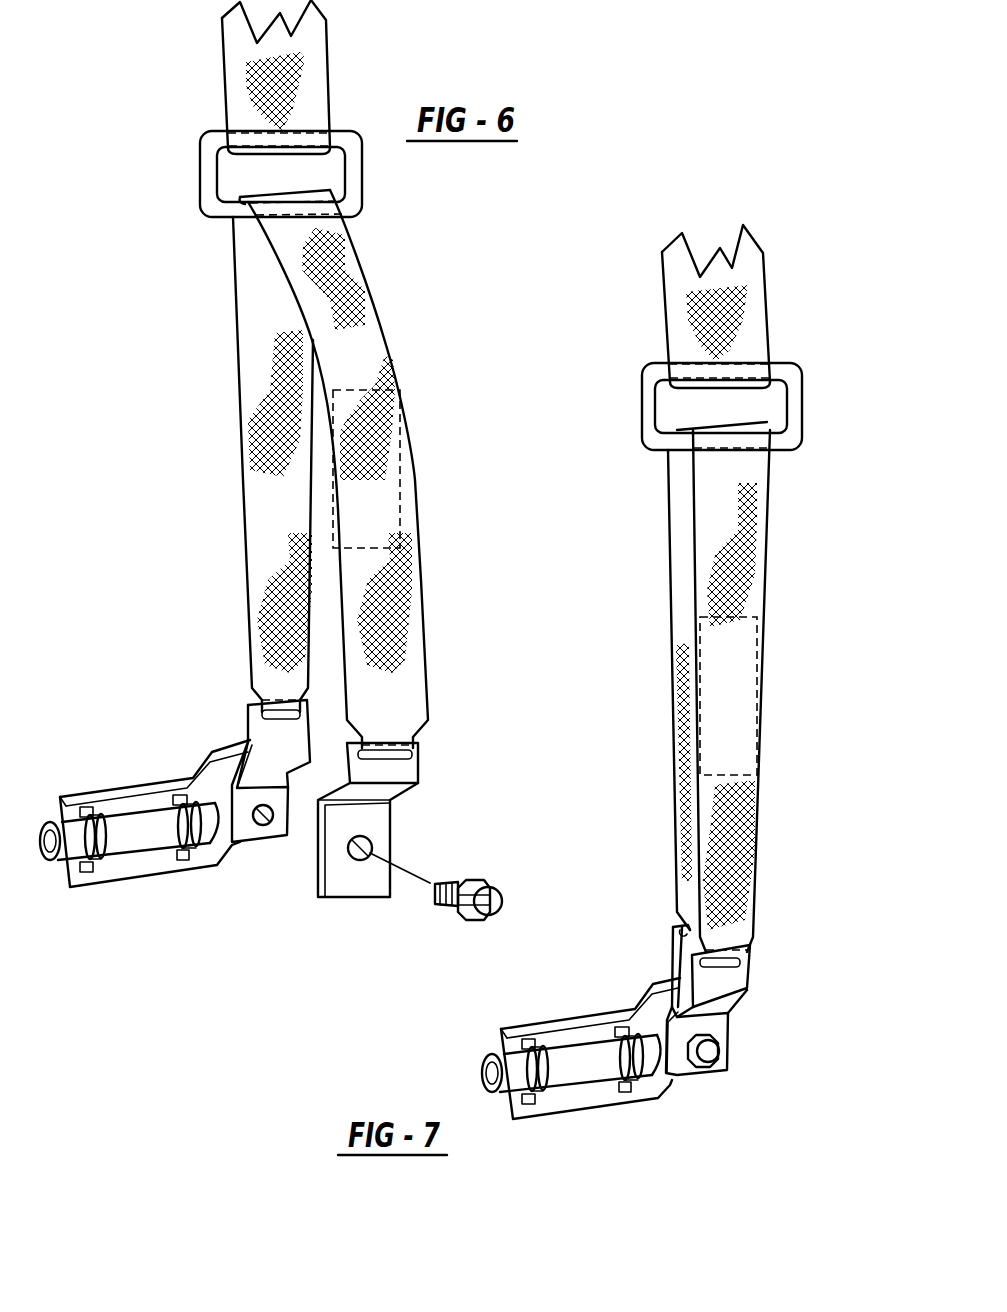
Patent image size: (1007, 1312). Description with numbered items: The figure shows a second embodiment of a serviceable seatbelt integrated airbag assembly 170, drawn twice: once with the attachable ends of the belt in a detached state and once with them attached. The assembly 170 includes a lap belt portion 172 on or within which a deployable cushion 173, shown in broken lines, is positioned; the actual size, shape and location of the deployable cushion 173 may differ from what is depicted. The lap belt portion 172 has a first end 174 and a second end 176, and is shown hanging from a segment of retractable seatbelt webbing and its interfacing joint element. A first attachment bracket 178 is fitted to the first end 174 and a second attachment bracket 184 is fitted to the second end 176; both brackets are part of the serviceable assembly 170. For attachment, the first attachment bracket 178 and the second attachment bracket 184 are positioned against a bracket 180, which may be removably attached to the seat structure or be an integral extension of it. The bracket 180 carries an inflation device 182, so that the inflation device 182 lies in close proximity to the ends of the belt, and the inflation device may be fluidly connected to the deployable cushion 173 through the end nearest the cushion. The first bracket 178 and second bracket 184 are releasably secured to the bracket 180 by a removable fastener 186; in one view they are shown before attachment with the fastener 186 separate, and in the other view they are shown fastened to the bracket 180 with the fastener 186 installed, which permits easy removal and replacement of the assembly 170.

In FIG. 6, the serviceable seatbelt integrated airbag assembly 170 is at (196, 505).
In FIG. 7, the serviceable seatbelt integrated airbag assembly 170 is at (636, 738).
In FIG. 6, the lap belt portion 172 is at (255, 317).
In FIG. 7, the lap belt portion 172 is at (678, 578).
In FIG. 6, the deployable cushion 173 is at (367, 518).
In FIG. 7, the deployable cushion 173 is at (730, 717).
In FIG. 6, the first end 174 is at (265, 677).
In FIG. 7, the first end 174 is at (683, 895).
In FIG. 6, the second end 176 is at (412, 673).
In FIG. 7, the second end 176 is at (733, 933).
In FIG. 6, the first attachment bracket 178 is at (248, 833).
In FIG. 7, the first attachment bracket 178 is at (662, 1085).
In FIG. 6, the bracket 180 is at (103, 805).
In FIG. 7, the bracket 180 is at (562, 1037).
In FIG. 6, the inflation device 182 is at (132, 838).
In FIG. 7, the inflation device 182 is at (570, 1067).
In FIG. 6, the second attachment bracket 184 is at (353, 883).
In FIG. 7, the second attachment bracket 184 is at (683, 1083).
In FIG. 6, the removable fastener 186 is at (460, 883).
In FIG. 7, the removable fastener 186 is at (713, 1053).